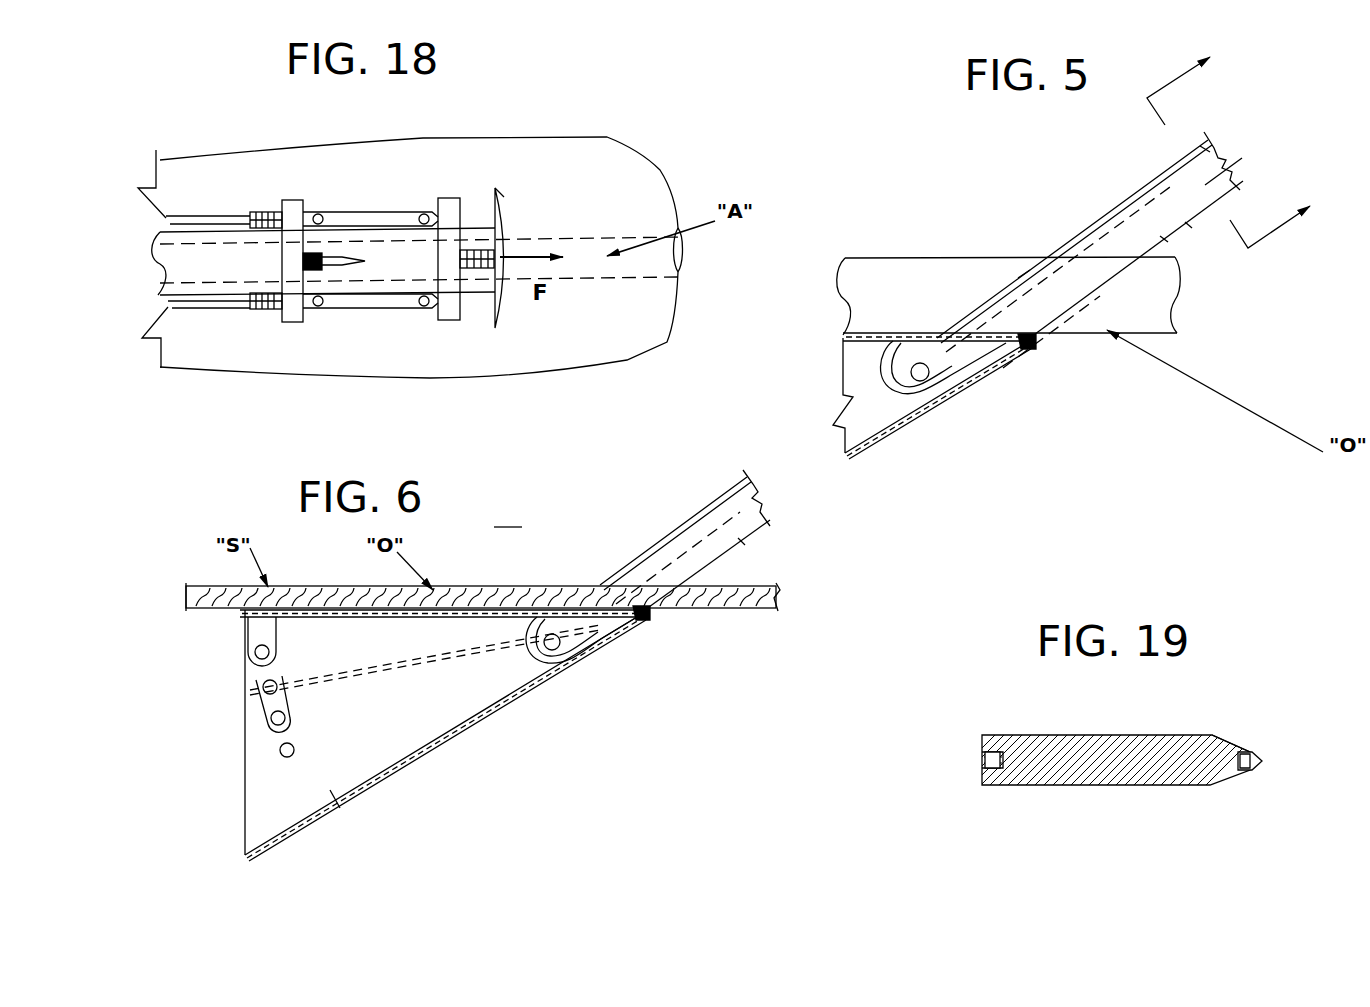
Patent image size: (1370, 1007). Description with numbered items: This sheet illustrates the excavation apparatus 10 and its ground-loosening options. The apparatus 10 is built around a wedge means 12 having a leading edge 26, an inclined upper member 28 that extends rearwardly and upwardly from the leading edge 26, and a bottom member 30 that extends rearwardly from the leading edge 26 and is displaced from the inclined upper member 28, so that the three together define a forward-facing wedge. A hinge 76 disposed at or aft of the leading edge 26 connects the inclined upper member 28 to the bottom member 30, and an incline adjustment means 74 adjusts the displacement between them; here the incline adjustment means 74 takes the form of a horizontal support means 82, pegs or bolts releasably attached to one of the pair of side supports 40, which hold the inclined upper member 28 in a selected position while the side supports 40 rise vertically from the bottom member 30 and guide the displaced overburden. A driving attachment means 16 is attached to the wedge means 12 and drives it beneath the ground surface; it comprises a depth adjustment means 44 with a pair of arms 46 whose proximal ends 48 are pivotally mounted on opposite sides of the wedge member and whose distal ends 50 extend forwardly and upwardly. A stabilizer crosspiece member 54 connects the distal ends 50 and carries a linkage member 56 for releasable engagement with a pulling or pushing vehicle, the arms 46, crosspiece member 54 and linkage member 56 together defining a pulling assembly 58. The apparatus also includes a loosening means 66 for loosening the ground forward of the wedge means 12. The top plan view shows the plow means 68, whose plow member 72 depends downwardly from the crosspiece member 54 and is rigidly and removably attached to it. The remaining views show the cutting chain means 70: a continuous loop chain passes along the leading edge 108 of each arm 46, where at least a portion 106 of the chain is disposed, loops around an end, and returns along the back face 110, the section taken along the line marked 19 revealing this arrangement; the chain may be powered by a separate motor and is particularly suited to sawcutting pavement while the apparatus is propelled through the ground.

In FIG. 6, the excavation apparatus 10 is at (508, 515).
In FIG. 6, the wedge means 12 is at (424, 783).
In FIG. 18, the driving attachment means 16 is at (308, 180).
In FIG. 5, the driving attachment means 16 is at (1072, 215).
In FIG. 6, the driving attachment means 16 is at (688, 513).
In FIG. 19, the driving attachment means 16 is at (1100, 760).
In FIG. 5, the section line 19 is at (1245, 141).
In FIG. 6, the leading edge 26 is at (643, 613).
In FIG. 5, the inclined upper member 28 is at (867, 343).
In FIG. 6, the inclined upper member 28 is at (427, 616).
In FIG. 5, the bottom member 30 is at (900, 422).
In FIG. 6, the bottom member 30 is at (448, 735).
In FIG. 6, the side supports 40 is at (326, 790).
In FIG. 18, the depth adjustment means 44 is at (261, 168).
In FIG. 18, the arms 46 is at (193, 217).
In FIG. 5, the proximal ends 48 is at (947, 367).
In FIG. 6, the proximal ends 48 is at (572, 638).
In FIG. 18, the distal ends 50 is at (243, 213).
In FIG. 18, the stabilizer crosspiece member 54 is at (398, 214).
In FIG. 18, the linkage member 56 is at (503, 212).
In FIG. 18, the pulling assembly 58 is at (413, 333).
In FIG. 5, the loosening means 66 is at (1020, 237).
In FIG. 18, the plow means 68 is at (343, 247).
In FIG. 5, the cutting chain means 70 is at (1187, 220).
In FIG. 6, the cutting chain means 70 is at (742, 540).
In FIG. 19, the cutting chain means 70 is at (1248, 767).
In FIG. 18, the plow member 72 is at (331, 266).
In FIG. 6, the incline adjustment means 74 is at (238, 747).
In FIG. 5, the hinge 76 is at (1034, 344).
In FIG. 6, the hinge 76 is at (643, 618).
In FIG. 6, the horizontal support means 82 is at (250, 708).
In FIG. 5, the portion of the cutting chain means 106 is at (1163, 233).
In FIG. 19, the portion of the cutting chain means 106 is at (1247, 748).
In FIG. 5, the leading edge 108 is at (1207, 180).
In FIG. 19, the leading edge 108 is at (1222, 733).
In FIG. 5, the back face 110 is at (1027, 275).
In FIG. 19, the back face 110 is at (988, 735).